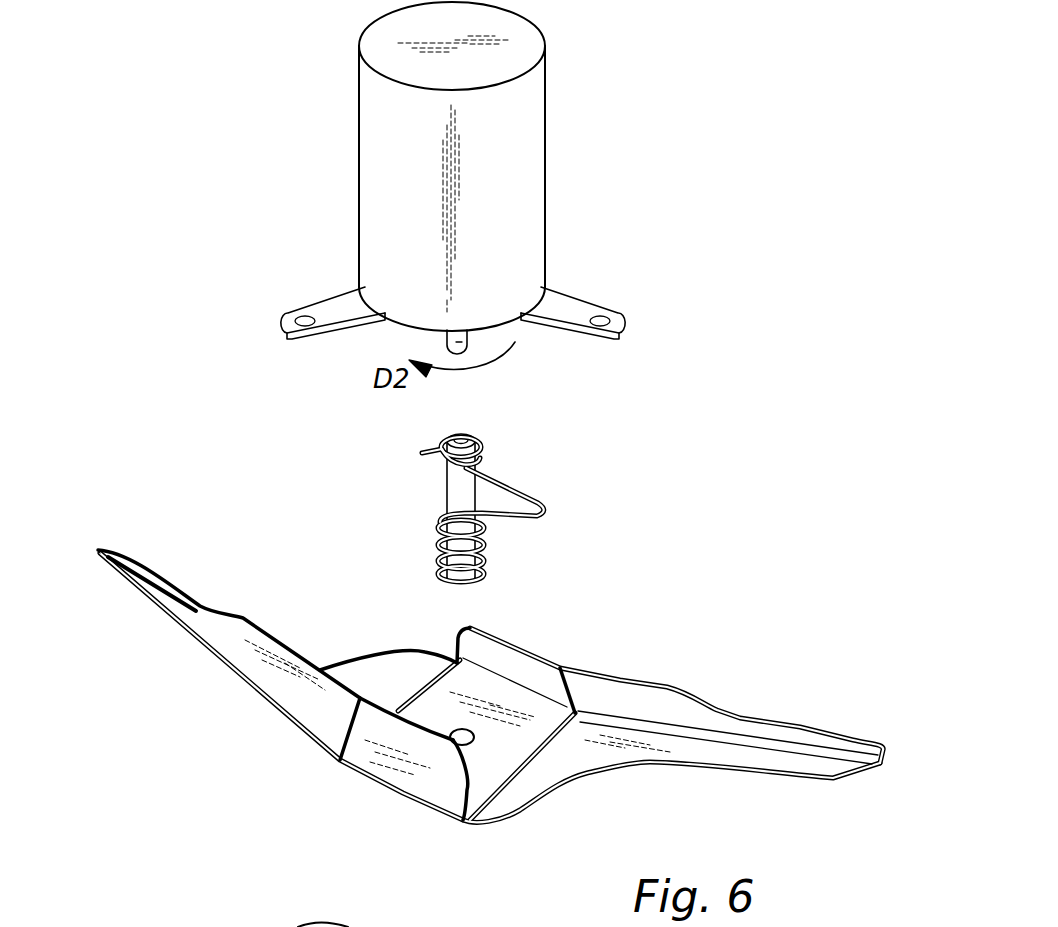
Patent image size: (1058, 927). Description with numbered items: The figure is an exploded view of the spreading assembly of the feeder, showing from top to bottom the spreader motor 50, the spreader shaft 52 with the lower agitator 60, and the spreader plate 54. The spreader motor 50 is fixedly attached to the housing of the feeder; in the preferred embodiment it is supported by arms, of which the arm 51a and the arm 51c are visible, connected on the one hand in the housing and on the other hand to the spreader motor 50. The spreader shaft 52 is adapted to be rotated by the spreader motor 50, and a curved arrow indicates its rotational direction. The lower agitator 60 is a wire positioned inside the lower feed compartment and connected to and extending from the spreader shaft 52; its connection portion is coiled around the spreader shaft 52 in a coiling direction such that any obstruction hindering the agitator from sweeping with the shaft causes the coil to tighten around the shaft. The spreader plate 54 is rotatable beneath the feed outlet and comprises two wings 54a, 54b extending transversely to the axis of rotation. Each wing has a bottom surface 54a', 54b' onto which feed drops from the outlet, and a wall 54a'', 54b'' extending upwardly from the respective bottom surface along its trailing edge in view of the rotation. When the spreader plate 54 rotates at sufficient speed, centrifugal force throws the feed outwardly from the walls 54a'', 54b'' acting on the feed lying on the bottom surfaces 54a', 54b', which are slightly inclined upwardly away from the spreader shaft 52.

The spreader motor 50 is at (515, 188).
The arm 51a is at (572, 308).
The arm 51c is at (340, 308).
The spreader shaft 52 is at (462, 342).
The lower agitator 60 is at (517, 490).
The spreader plate 54 is at (471, 718).
The wing 54a is at (728, 723).
The bottom surface 54a' is at (494, 831).
The wall 54a'' is at (661, 682).
The wing 54b is at (256, 662).
The bottom surface 54b' is at (385, 631).
The wall 54b'' is at (291, 707).